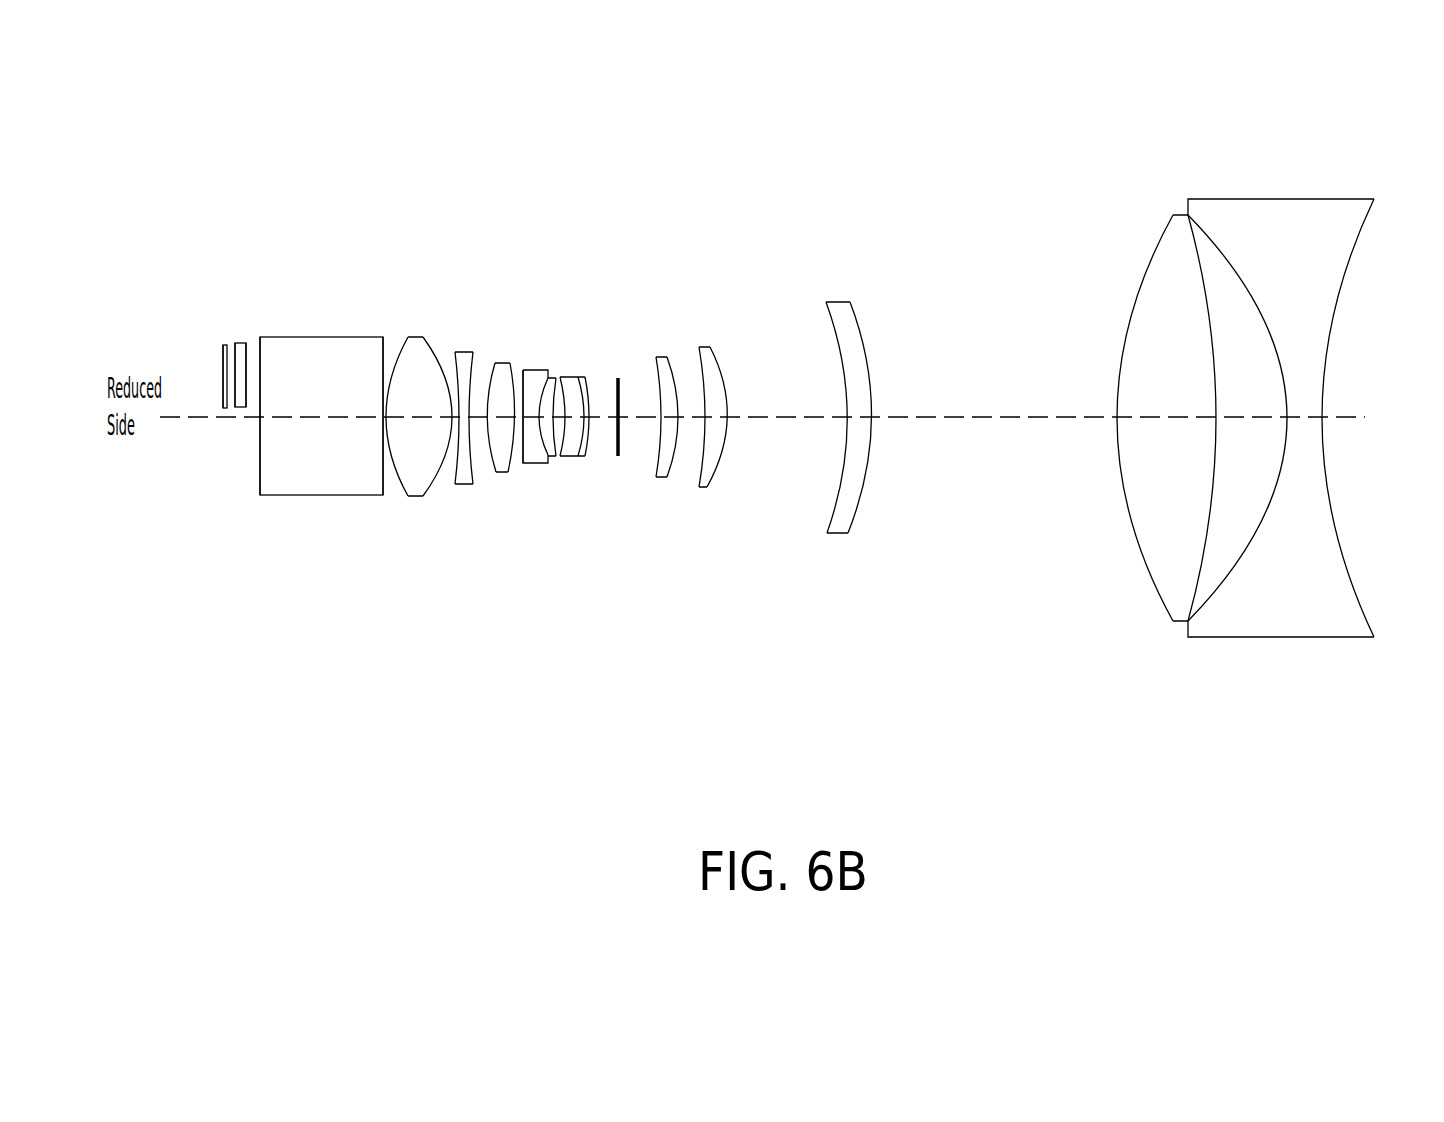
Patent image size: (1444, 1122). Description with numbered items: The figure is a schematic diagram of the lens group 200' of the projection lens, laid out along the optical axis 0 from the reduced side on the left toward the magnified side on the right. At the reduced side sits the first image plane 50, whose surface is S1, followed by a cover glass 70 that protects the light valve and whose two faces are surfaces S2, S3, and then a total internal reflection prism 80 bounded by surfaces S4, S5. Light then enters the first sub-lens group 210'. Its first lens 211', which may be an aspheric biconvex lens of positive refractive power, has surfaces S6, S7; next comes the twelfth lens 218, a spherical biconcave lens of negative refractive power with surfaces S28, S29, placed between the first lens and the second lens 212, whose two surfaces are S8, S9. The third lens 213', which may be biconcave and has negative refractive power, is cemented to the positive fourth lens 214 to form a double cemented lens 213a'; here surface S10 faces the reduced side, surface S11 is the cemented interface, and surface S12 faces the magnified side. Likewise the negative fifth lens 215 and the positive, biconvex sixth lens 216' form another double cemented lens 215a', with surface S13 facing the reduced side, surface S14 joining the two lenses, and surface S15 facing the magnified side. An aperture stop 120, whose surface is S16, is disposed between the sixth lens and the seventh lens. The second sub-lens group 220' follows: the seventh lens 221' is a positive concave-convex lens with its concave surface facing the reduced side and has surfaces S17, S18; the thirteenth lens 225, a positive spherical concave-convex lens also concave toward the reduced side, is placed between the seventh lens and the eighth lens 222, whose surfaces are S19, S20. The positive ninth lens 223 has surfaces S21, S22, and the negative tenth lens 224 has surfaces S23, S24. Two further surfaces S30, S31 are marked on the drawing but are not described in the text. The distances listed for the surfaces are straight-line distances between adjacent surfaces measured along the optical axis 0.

The optical axis 0 is at (1364, 417).
The first image plane 50 is at (192, 335).
The cover glass 70 is at (235, 335).
The total internal reflection prism 80 is at (241, 429).
The aperture stop 120 is at (644, 369).
The lens group 200' is at (772, 444).
The first sub-lens group 210' is at (398, 458).
The first lens 211' is at (299, 429).
The twelfth lens 218 is at (344, 429).
The second lens 212 is at (390, 429).
The third lens 213' is at (449, 401).
The fourth lens 214 is at (495, 421).
The double cemented lens 213a' is at (466, 429).
The fifth lens 215 is at (530, 506).
The sixth lens 216' is at (573, 401).
The double cemented lens 215a' is at (541, 429).
The second sub-lens group 220' is at (1023, 410).
The seventh lens 221' is at (740, 429).
The thirteenth lens 225 is at (797, 429).
The eighth lens 222 is at (891, 429).
The ninth lens 223 is at (1099, 380).
The tenth lens 224 is at (1226, 380).
The surface S1 is at (222, 371).
The surface S2 is at (235, 358).
The surface S3 is at (248, 372).
The surface S4 is at (262, 394).
The surface S5 is at (382, 356).
The surface S6 is at (401, 352).
The surface S7 is at (437, 365).
The surface S8 is at (495, 367).
The surface S9 is at (512, 395).
The surface S10 is at (527, 381).
The surface S11 is at (543, 392).
The surface S12 is at (552, 403).
The surface S13 is at (563, 447).
The surface S14 is at (583, 437).
The surface S15 is at (590, 388).
The surface S16 is at (617, 433).
The surface S17 is at (653, 386).
The surface S18 is at (672, 368).
The surface S19 is at (837, 332).
The surface S20 is at (867, 353).
The surface S21 is at (1153, 247).
The surface S22 is at (1200, 265).
The surface S23 is at (1237, 256).
The surface S24 is at (1357, 249).
The surface S28 is at (457, 367).
The surface S29 is at (476, 386).
The surface S30 is at (702, 371).
The surface S31 is at (723, 388).